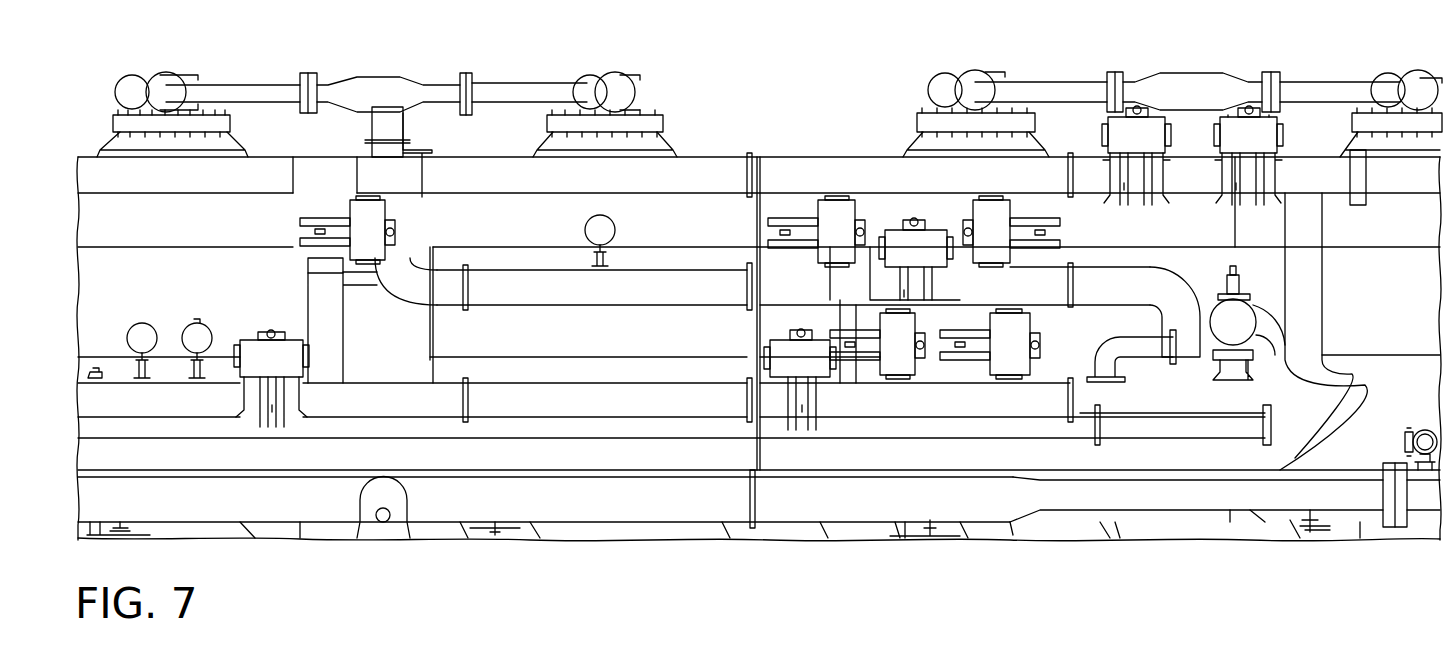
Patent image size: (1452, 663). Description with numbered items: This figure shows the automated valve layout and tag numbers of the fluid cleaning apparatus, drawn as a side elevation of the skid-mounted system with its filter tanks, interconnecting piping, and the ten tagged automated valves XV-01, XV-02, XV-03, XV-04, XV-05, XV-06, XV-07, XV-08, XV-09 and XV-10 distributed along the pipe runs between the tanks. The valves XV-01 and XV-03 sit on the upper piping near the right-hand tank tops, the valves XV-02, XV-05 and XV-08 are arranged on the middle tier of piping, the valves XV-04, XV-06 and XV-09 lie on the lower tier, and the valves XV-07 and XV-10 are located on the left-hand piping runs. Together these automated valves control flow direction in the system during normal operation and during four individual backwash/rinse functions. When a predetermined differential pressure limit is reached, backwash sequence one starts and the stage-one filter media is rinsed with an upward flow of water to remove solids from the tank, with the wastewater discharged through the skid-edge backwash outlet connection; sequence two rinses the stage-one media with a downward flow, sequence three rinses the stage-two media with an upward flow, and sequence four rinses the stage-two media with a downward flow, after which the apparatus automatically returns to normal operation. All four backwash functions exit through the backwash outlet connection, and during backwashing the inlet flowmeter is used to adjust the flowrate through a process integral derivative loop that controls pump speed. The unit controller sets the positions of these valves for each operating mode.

The automated valve XV-01 is at (1270, 143).
The automated valve XV-02 is at (906, 250).
The automated valve XV-03 is at (1140, 137).
The automated valve XV-04 is at (1013, 327).
The automated valve XV-05 is at (997, 232).
The automated valve XV-06 is at (897, 365).
The automated valve XV-07 is at (265, 355).
The automated valve XV-08 is at (828, 222).
The automated valve XV-09 is at (792, 367).
The automated valve XV-10 is at (368, 216).